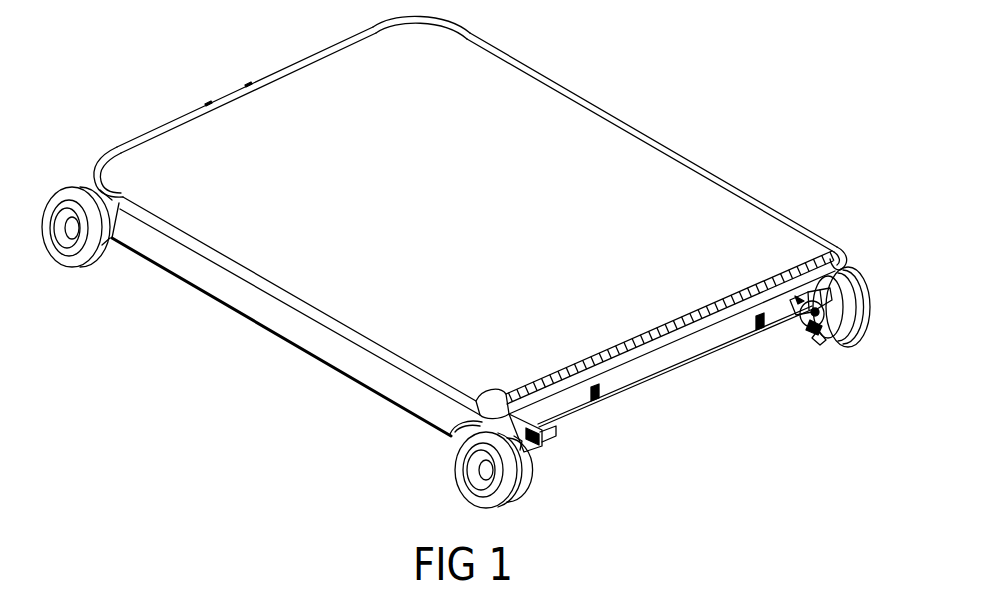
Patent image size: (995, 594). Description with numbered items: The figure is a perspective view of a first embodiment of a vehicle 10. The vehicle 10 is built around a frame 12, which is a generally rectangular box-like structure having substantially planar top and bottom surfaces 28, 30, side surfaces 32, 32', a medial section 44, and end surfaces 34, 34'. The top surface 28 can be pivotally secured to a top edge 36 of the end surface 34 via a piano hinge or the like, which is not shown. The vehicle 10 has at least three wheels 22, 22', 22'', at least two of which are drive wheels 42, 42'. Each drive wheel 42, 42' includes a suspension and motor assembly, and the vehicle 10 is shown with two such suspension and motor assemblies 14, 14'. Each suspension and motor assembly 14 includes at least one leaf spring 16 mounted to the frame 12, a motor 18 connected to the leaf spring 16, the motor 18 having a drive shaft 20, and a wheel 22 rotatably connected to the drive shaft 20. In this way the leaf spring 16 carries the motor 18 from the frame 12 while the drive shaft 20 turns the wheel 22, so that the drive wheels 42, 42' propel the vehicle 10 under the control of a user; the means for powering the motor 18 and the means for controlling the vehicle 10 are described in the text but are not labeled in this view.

The vehicle 10 is at (130, 78).
The frame 12 is at (402, 394).
The suspension and motor assembly 14 is at (824, 363).
The suspension and motor assembly 14' is at (572, 465).
The leaf spring 16 is at (580, 426).
The motor 18 is at (821, 345).
The drive shaft 20 is at (833, 302).
The wheel 22 is at (450, 475).
The wheel 22' is at (862, 294).
The wheel 22'' is at (59, 242).
The top surface 28 is at (602, 152).
The bottom surface 30 is at (272, 333).
The side surface 32 is at (299, 299).
The side surface 32' is at (653, 136).
The end surface 34 is at (675, 366).
The end surface 34' is at (245, 87).
The top edge 36 is at (823, 263).
The drive wheel 42 is at (519, 489).
The drive wheel 42' is at (873, 307).
The medial section 44 is at (657, 358).